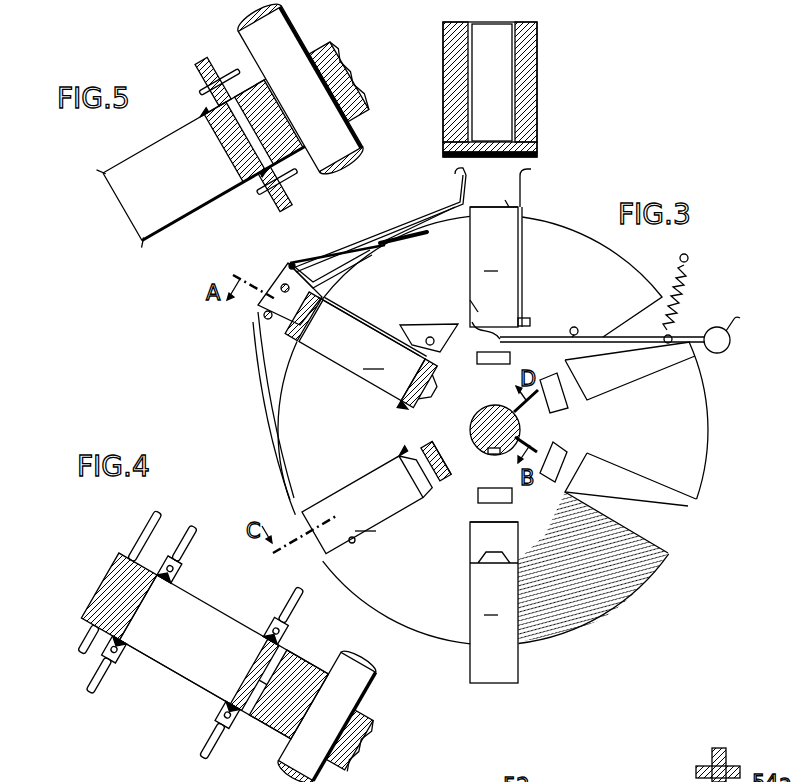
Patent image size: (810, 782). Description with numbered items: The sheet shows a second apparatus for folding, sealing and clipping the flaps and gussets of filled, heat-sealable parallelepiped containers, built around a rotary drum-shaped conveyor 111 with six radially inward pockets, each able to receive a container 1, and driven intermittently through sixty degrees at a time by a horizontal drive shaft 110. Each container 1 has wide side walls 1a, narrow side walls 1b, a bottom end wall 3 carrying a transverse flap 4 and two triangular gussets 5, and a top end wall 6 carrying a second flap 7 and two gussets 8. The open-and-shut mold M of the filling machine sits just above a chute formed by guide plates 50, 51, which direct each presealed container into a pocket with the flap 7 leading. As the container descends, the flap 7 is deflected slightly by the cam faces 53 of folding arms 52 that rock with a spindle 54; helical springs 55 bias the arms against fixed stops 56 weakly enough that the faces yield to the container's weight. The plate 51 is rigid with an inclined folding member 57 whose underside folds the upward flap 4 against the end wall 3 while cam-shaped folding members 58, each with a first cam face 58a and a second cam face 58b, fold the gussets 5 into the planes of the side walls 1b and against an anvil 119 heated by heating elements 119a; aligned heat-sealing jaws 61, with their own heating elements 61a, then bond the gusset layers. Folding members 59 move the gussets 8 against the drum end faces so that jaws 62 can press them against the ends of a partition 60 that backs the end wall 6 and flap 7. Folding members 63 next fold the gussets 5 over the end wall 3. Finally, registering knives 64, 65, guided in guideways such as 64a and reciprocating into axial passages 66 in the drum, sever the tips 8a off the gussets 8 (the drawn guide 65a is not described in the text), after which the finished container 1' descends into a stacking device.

In FIG. 3, the filled and presealed parallelepiped container 1 is at (494, 267).
In FIG. 3, the finished parallelepiped container 1' is at (494, 602).
In FIG. 4, the wide rectangular side wall 1a is at (224, 657).
In FIG. 3, the narrow rectangular side wall 1b is at (505, 95).
In FIG. 3, the bottom end wall 3 is at (479, 207).
In FIG. 3, the transverse flap 4 is at (506, 207).
In FIG. 5, the triangular gusset 5 is at (202, 161).
In FIG. 4, the triangular gusset 5 is at (145, 536).
In FIG. 3, the top end wall 6 is at (500, 320).
In FIG. 4, the top end wall 6 is at (263, 682).
In FIG. 3, the second transverse flap 7 is at (519, 323).
In FIG. 5, the triangular gusset 8 is at (233, 142).
In FIG. 3, the triangular gusset 8 is at (298, 263).
In FIG. 4, the triangular gusset 8 is at (195, 640).
In FIG. 5, the gusset tip 8a is at (234, 142).
In FIG. 3, the guide plate 50 is at (532, 169).
In FIG. 3, the guide plate 51 is at (454, 173).
In FIG. 3, the folding arm 52 is at (545, 336).
In FIG. 3, the cam face 53 is at (478, 352).
In FIG. 3, the spindle 54 is at (731, 331).
In FIG. 3, the helical spring 55 is at (692, 300).
In FIG. 3, the stop 56 is at (580, 328).
In FIG. 3, the folding member 57 is at (456, 202).
In FIG. 3, the cam-shaped folding member 58 is at (420, 236).
In FIG. 3, the first cam face 58a is at (402, 226).
In FIG. 3, the second cam face 58b is at (350, 256).
In FIG. 3, the folding member 59 is at (422, 330).
In FIG. 4, the partition 60 is at (254, 674).
In FIG. 3, the heat-sealing jaw 61 is at (306, 342).
In FIG. 4, the heat-sealing jaw 61 is at (142, 609).
In FIG. 4, the heating element 61a is at (175, 560).
In FIG. 4, the heat-sealing jaw 62 is at (251, 673).
In FIG. 3, the folding member 63 is at (252, 365).
In FIG. 5, the knife 64 is at (275, 189).
In FIG. 3, the knife 64 is at (440, 480).
In FIG. 5, the guideway 64a is at (276, 181).
In FIG. 5, the knife 65 is at (213, 81).
In FIG. 3, the knife 65 is at (437, 491).
In FIG. 5, the rod 65a is at (219, 82).
In FIG. 5, the axially extending passage 66 is at (340, 81).
In FIG. 3, the axially extending passage 66 is at (490, 366).
In FIG. 4, the axially extending passage 66 is at (351, 741).
In FIG. 5, the drive shaft 110 is at (300, 89).
In FIG. 3, the drive shaft 110 is at (470, 430).
In FIG. 4, the drive shaft 110 is at (326, 714).
In FIG. 5, the rotary drum-shaped conveyor 111 is at (269, 122).
In FIG. 3, the rotary drum-shaped conveyor 111 is at (650, 581).
In FIG. 4, the rotary drum-shaped conveyor 111 is at (288, 694).
In FIG. 3, the anvil 119 is at (262, 317).
In FIG. 4, the anvil 119 is at (119, 596).
In FIG. 4, the heating element 119a is at (89, 639).
In FIG. 3, the open-and-shut mold M is at (545, 49).